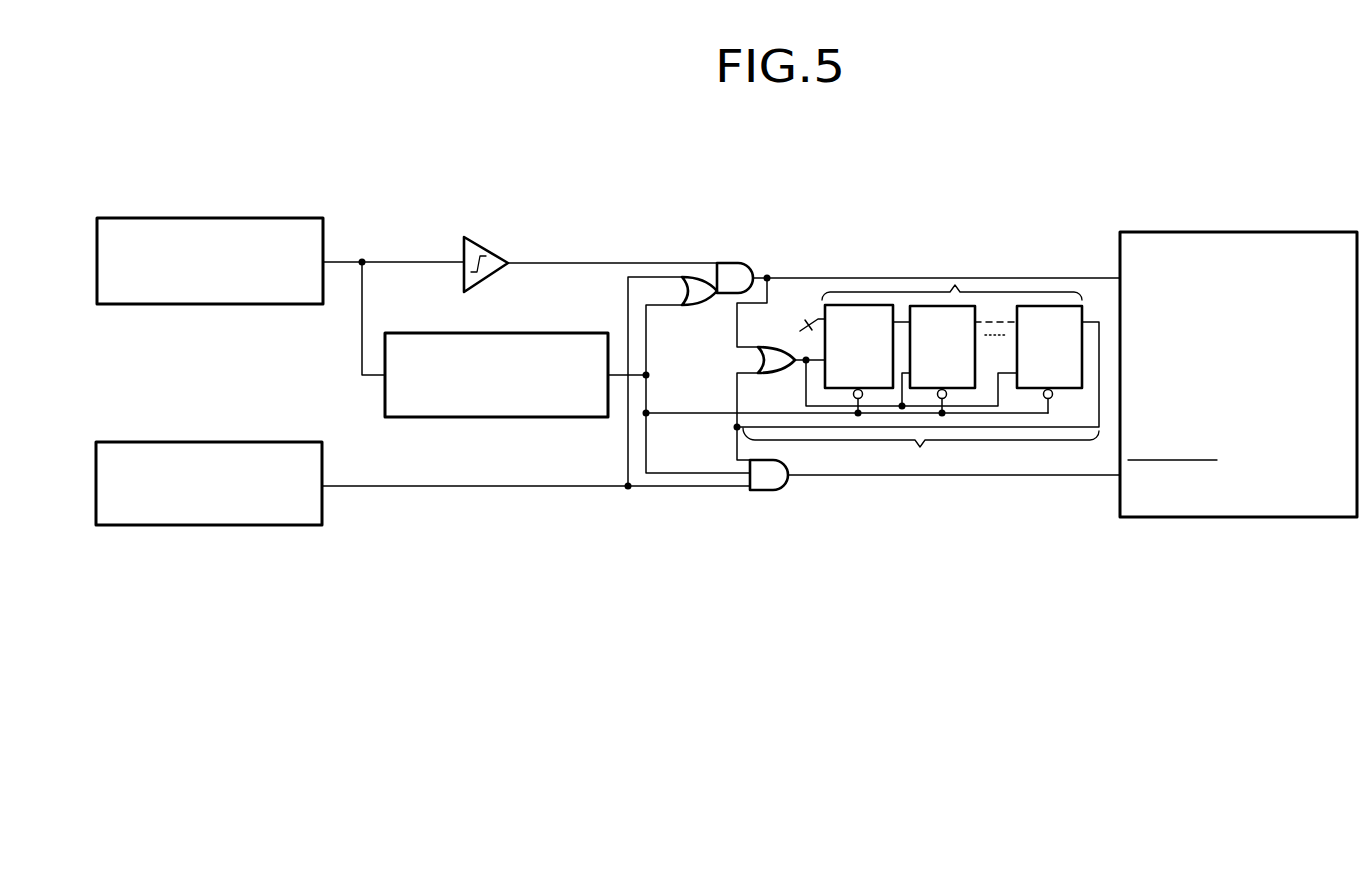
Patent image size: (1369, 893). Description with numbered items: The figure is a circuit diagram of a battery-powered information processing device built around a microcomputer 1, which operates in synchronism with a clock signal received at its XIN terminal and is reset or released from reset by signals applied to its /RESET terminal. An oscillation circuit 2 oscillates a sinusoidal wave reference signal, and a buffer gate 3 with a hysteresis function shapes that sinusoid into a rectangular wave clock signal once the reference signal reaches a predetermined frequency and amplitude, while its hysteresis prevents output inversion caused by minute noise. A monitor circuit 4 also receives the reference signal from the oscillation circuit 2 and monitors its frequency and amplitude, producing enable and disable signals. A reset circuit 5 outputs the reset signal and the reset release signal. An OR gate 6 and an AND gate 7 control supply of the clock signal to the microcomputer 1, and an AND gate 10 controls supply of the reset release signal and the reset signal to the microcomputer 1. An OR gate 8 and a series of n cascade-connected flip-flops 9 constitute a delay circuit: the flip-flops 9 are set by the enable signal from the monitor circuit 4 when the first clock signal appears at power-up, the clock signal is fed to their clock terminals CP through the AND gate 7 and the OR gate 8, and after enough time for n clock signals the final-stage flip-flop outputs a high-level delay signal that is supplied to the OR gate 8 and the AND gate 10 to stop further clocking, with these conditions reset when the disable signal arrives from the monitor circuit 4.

The microcomputer 1 is at (1197, 230).
The oscillation circuit 2 is at (251, 218).
The buffer gate 3 is at (477, 238).
The monitor circuit 4 is at (528, 333).
The reset circuit 5 is at (242, 527).
The OR gate 6 is at (692, 307).
The AND gate 7 is at (728, 262).
The OR gate 8 is at (755, 362).
The flip-flop series 9 is at (955, 286).
The AND gate 10 is at (772, 493).